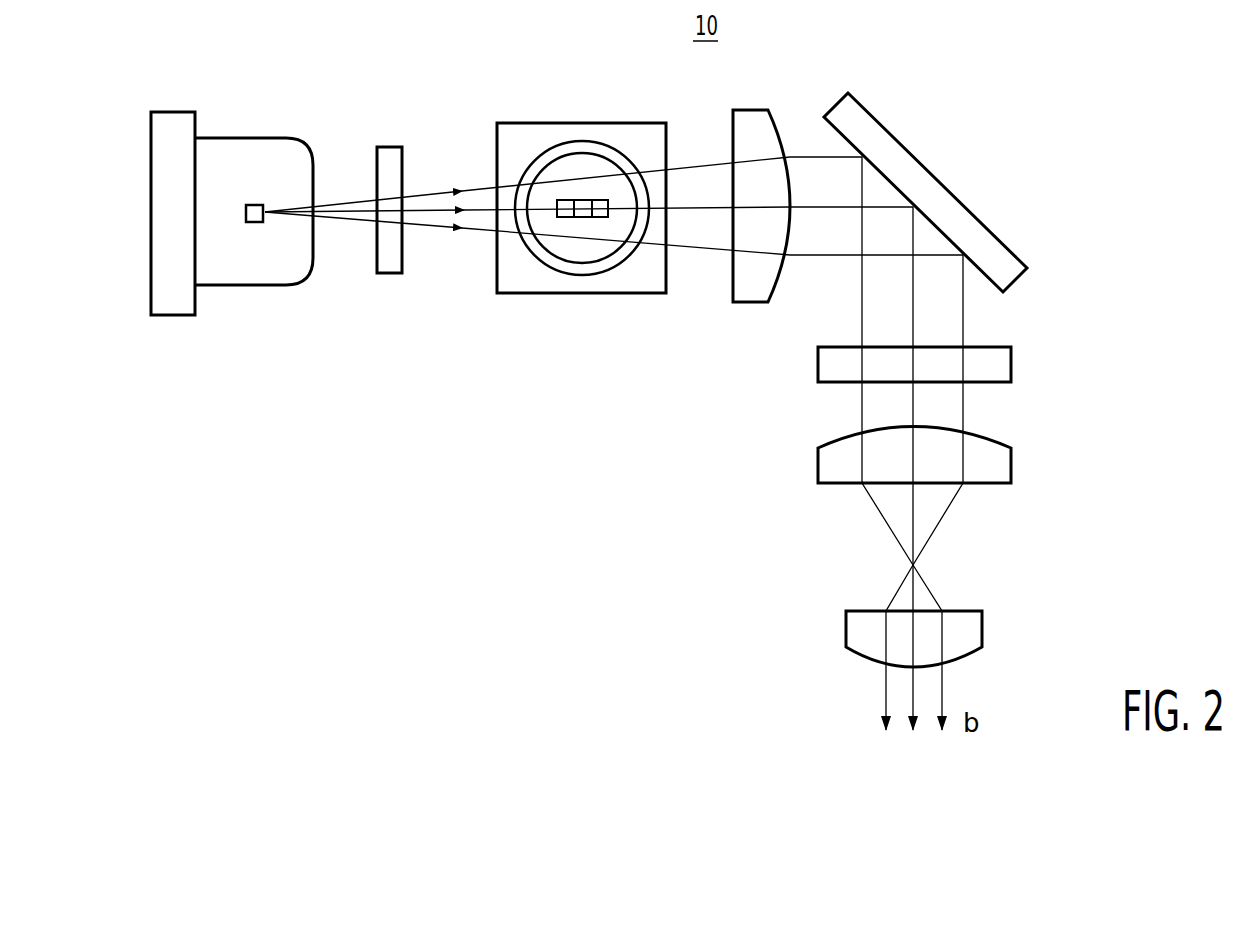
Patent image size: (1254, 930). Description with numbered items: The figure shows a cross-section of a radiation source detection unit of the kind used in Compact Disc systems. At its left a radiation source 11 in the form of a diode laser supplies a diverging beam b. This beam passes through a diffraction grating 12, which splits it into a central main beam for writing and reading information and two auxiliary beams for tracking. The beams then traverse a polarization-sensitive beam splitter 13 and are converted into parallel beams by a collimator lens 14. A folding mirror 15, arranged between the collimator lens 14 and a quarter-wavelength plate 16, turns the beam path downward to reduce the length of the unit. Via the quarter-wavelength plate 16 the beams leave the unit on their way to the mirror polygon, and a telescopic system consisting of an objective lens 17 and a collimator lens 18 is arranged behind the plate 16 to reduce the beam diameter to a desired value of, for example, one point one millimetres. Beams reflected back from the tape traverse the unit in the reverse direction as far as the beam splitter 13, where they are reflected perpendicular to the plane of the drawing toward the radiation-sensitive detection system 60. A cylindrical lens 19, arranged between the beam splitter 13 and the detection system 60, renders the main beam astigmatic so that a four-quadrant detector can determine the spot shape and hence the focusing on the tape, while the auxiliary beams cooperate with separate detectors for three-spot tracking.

The radiation source 11 is at (250, 243).
The diffraction grating 12 is at (390, 273).
The polarization-sensitive beam splitter 13 is at (570, 123).
The collimator lens 14 is at (752, 303).
The folding mirror 15 is at (980, 215).
The quarter-wavelength plate 16 is at (1011, 362).
The objective lens 17 is at (1011, 467).
The collimator lens 18 is at (982, 628).
The cylindrical lens 19 is at (612, 262).
The radiation-sensitive detection system 60 is at (565, 218).